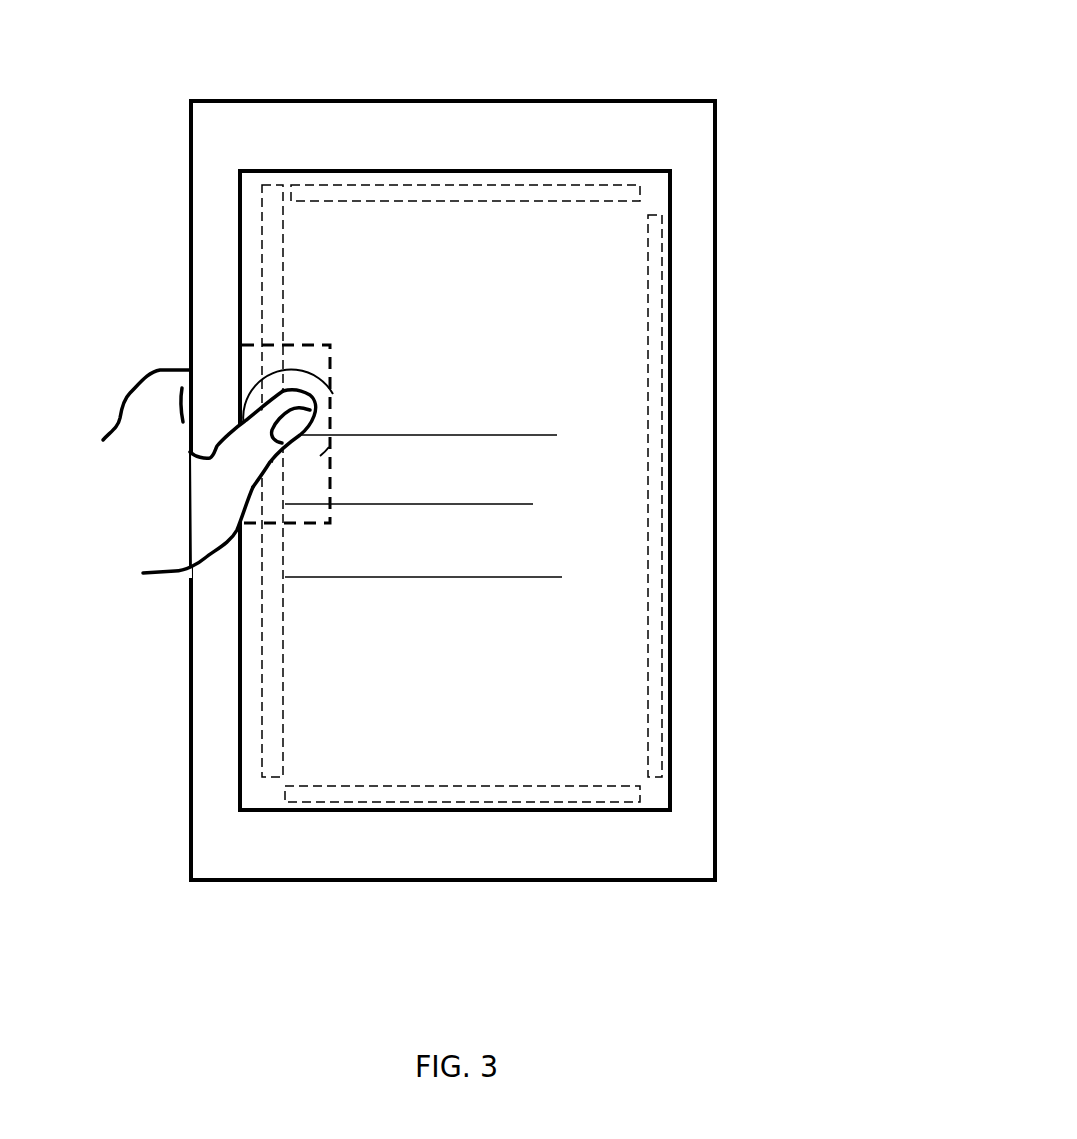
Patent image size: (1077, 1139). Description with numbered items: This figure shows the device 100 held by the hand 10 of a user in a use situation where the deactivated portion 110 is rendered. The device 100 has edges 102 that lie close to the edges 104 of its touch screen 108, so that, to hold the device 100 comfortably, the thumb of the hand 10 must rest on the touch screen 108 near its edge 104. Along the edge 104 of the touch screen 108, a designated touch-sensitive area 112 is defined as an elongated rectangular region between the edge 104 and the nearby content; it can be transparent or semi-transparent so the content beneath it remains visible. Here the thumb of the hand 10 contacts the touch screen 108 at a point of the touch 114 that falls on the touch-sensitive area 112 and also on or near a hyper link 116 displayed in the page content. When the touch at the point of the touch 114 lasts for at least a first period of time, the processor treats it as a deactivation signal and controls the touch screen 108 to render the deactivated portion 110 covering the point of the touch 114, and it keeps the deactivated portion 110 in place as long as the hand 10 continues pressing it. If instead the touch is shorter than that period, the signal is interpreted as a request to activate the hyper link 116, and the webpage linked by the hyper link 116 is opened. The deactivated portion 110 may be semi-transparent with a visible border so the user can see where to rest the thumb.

The device 100 is at (640, 77).
The edges of the device 102 is at (716, 208).
The edges of the touch screen 104 is at (675, 358).
The touch screen 108 is at (600, 667).
The deactivated portion 110 is at (293, 512).
The touch-sensitive areas 112 is at (271, 732).
The point of the touch 114 is at (305, 372).
The hyper link 116 is at (557, 435).
The hand 10 is at (100, 412).